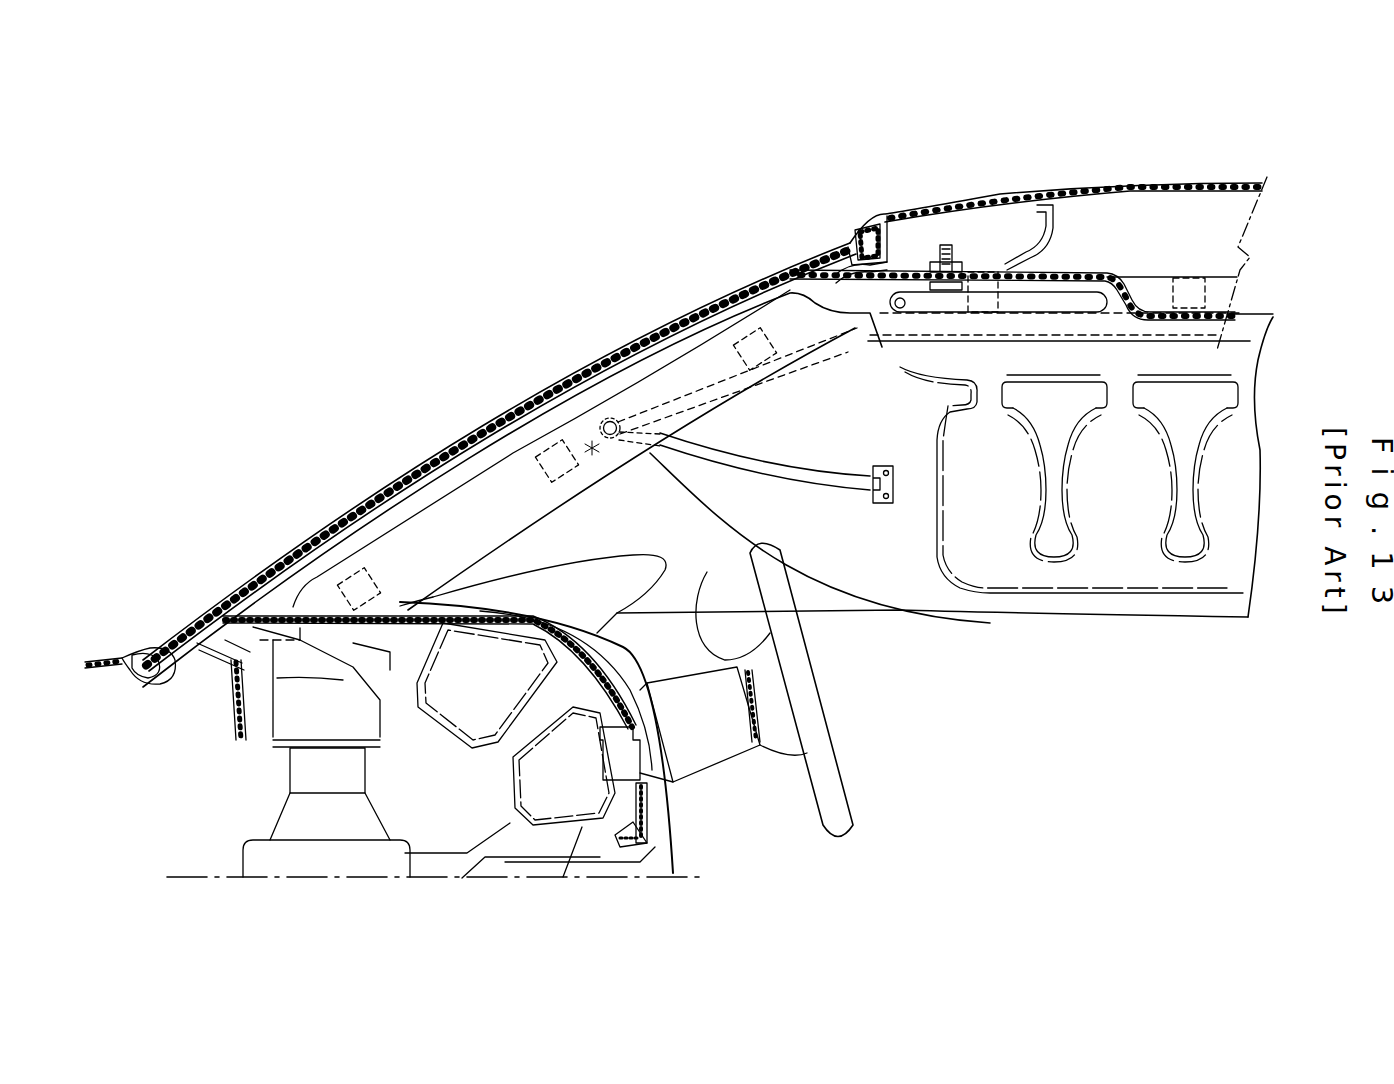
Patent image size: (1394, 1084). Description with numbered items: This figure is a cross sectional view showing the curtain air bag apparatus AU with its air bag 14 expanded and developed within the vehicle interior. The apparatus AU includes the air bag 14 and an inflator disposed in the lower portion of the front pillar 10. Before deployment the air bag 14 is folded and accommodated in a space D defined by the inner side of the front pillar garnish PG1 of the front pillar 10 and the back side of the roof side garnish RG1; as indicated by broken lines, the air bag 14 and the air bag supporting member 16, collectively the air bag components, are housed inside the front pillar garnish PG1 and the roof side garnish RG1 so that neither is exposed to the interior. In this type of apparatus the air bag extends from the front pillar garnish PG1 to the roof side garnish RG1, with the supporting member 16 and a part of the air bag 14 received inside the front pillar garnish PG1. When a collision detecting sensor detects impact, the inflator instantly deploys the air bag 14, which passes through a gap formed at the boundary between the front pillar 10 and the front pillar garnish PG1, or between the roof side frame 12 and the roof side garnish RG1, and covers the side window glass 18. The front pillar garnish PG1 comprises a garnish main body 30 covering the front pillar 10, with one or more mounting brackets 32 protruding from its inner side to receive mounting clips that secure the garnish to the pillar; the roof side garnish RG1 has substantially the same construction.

The front pillar 10 is at (468, 445).
The roof side frame 12 is at (1157, 305).
The air bag 14 is at (1083, 628).
The air bag supporting member 16 is at (783, 355).
The side window glass 18 is at (700, 560).
The garnish main body 30 is at (420, 537).
The mounting bracket 32 is at (350, 572).
The front pillar garnish PG1 is at (608, 365).
The roof side garnish RG1 is at (1128, 342).
The curtain air bag apparatus AU is at (1165, 628).
The space D is at (598, 450).